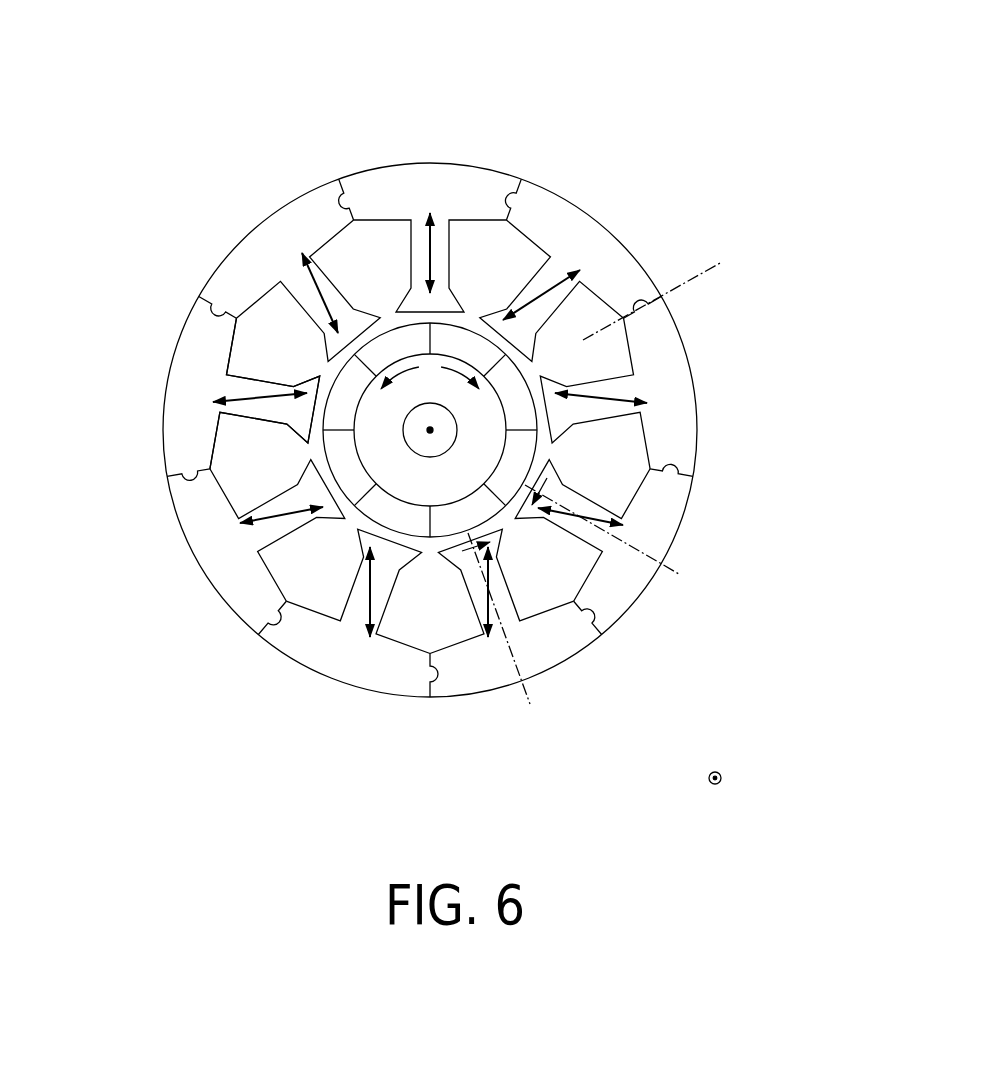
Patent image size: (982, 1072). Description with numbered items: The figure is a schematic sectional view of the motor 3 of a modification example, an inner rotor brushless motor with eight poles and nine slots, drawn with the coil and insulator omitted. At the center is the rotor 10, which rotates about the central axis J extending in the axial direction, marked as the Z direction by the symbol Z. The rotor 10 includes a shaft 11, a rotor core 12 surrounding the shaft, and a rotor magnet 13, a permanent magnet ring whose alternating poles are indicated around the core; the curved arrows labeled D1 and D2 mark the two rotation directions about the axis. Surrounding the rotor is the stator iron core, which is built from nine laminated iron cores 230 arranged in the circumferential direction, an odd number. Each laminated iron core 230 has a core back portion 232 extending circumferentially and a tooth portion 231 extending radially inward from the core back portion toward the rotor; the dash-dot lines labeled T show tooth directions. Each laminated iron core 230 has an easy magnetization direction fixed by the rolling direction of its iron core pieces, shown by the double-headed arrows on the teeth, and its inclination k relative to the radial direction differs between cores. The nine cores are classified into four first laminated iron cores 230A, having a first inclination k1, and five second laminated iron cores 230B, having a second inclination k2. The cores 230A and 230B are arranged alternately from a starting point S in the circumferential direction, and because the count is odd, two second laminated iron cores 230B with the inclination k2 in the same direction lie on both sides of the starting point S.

The motor 3 is at (650, 102).
The rotor 10 is at (487, 373).
The shaft 11 is at (432, 416).
The rotor core 12 is at (425, 370).
The rotor magnet 13 is at (373, 350).
The laminated iron core 230 is at (367, 425).
The first laminated iron core 230A is at (472, 180).
The second laminated iron core 230B is at (567, 222).
The tooth portion 231 is at (252, 375).
The core back portion 232 is at (178, 372).
The starting point S is at (672, 282).
The tooth direction T is at (685, 560).
The central axis J is at (431, 431).
The first rotation direction D1 is at (470, 392).
The second rotation direction D2 is at (393, 392).
The first inclination k1 is at (536, 492).
The second inclination k2 is at (463, 550).
The inclination k is at (516, 528).
The axial direction Z is at (732, 778).